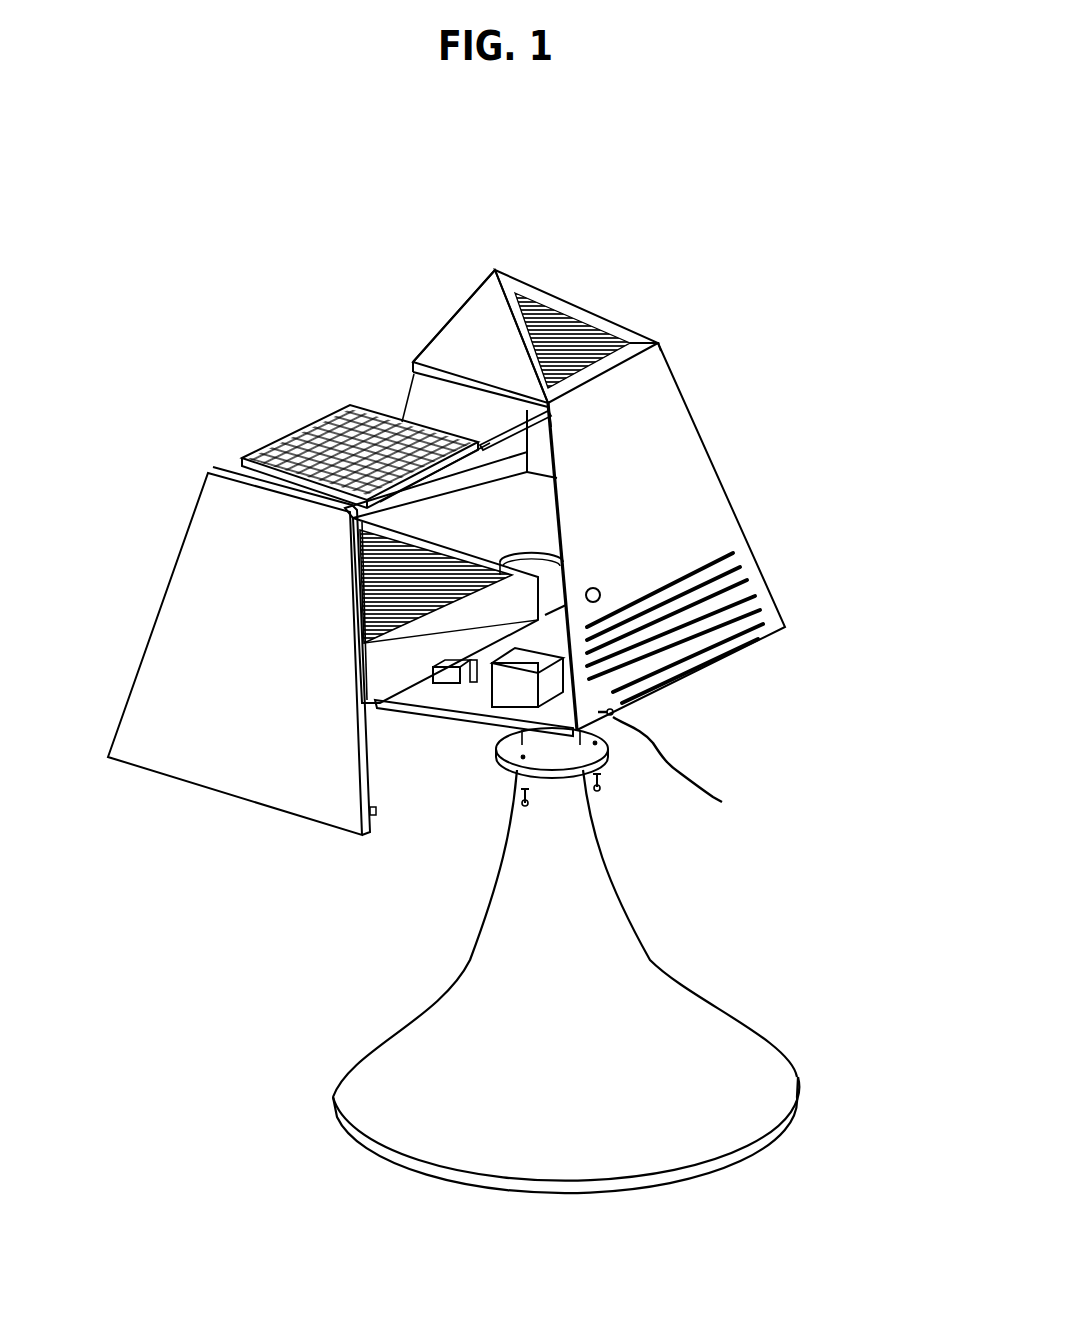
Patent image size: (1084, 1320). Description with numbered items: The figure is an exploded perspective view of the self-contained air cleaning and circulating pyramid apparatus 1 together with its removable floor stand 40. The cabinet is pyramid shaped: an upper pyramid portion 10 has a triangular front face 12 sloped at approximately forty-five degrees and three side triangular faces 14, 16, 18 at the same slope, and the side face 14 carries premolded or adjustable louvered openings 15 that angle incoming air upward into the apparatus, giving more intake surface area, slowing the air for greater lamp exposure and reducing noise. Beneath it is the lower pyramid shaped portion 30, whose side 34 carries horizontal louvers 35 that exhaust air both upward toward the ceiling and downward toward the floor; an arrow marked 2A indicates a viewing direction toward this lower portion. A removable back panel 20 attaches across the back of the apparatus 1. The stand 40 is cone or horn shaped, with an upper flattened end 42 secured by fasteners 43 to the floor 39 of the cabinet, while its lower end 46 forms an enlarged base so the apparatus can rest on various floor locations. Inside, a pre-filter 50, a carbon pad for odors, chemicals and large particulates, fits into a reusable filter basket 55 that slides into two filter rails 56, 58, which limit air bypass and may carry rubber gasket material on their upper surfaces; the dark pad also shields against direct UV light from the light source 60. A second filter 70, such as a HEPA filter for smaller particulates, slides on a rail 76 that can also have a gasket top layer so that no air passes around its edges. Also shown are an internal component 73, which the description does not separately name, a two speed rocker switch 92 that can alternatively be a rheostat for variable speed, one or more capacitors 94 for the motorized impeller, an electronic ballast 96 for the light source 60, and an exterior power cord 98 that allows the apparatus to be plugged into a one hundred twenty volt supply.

The apparatus 1 is at (663, 208).
The upper pyramid portion 10 is at (438, 247).
The triangular front face 12 is at (517, 282).
The side triangular face 14 is at (642, 343).
The louvered openings 15 is at (575, 318).
The side triangular face 16 is at (469, 378).
The side triangular face 18 is at (455, 317).
The removable back panel 20 is at (175, 655).
The detail view reference 2A is at (777, 417).
The lower pyramid shaped portion 30 is at (833, 513).
The side 34 is at (723, 517).
The horizontal louvers 35 is at (697, 647).
The floor 39 is at (482, 718).
The removable floor stand 40 is at (658, 1003).
The upper flattened end 42 is at (602, 757).
The fasteners 43 is at (600, 793).
The lower end 46 is at (800, 1093).
The pre-filter 50 is at (275, 440).
The filter basket 55 is at (252, 450).
The filter rail 56 is at (413, 383).
The filter rail 58 is at (550, 427).
The light source 60 is at (565, 445).
The second filter 70 is at (400, 672).
The fan motor 73 is at (568, 593).
The rail 76 is at (432, 531).
The two speed rocker switch 92 is at (600, 590).
The capacitor 94 is at (507, 683).
The electronic ballast 96 is at (460, 675).
The exterior power cord 98 is at (715, 795).